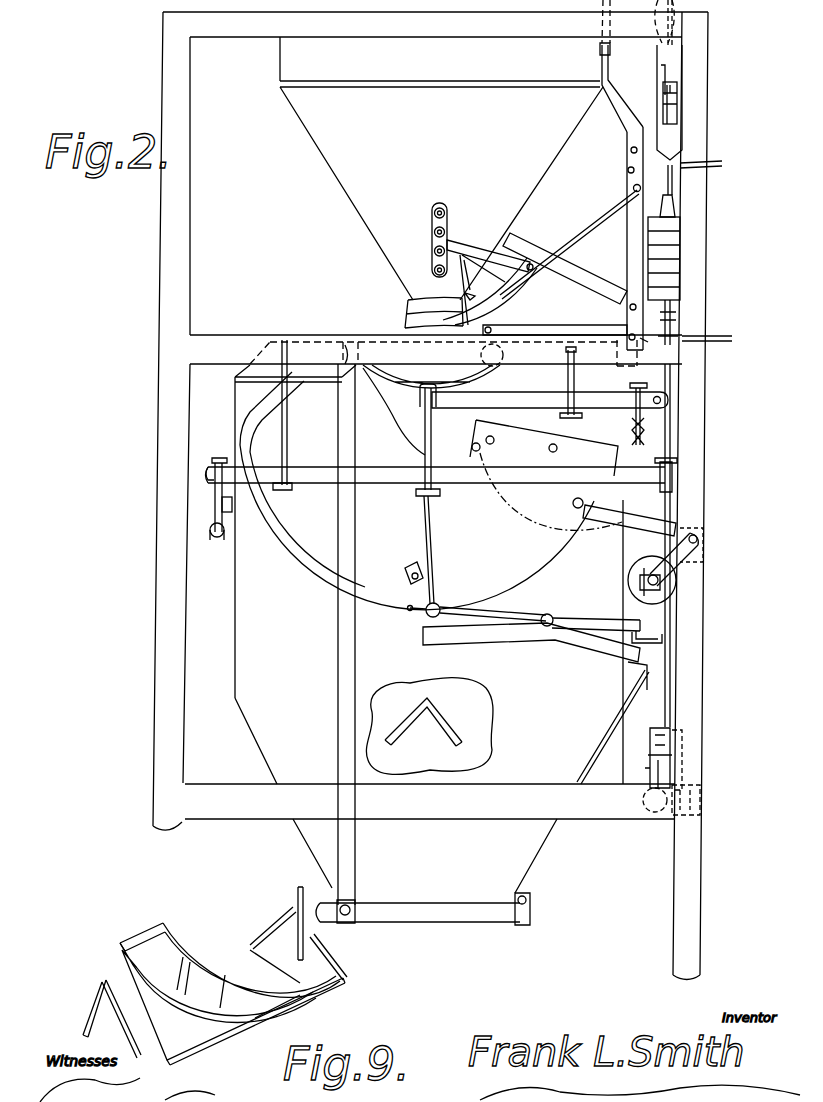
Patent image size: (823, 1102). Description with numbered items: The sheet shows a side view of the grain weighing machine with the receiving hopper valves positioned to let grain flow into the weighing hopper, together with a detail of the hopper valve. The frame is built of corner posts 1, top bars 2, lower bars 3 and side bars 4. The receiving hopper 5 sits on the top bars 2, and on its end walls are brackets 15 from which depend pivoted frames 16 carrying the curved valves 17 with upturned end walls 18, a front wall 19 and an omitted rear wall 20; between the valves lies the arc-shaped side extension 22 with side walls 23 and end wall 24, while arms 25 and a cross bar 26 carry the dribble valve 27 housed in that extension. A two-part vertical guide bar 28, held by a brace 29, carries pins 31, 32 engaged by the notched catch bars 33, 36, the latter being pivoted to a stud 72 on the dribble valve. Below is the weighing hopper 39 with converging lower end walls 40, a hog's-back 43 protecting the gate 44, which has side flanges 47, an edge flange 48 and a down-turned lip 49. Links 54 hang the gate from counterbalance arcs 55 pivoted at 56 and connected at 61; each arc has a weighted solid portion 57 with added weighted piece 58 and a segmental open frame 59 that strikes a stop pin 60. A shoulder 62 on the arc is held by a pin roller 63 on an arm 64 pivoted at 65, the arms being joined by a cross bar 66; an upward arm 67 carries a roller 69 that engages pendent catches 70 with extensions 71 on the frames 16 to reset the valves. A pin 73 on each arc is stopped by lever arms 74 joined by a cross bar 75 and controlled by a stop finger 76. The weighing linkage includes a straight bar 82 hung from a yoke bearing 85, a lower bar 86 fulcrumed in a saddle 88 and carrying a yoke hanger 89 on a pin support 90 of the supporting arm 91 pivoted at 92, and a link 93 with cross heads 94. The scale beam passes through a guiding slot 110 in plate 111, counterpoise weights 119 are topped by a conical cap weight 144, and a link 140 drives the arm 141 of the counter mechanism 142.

In FIG. 2, the corner posts 1 is at (170, 828).
In FIG. 2, the top bars 2 is at (385, 30).
In FIG. 2, the lower bars 3 is at (430, 801).
In FIG. 2, the side bars 4 is at (237, 347).
In FIG. 2, the receiving hopper 5 is at (318, 121).
In FIG. 2, the brackets 15 is at (445, 207).
In FIG. 2, the frames 16 is at (468, 250).
In FIG. 9, the frames 16 is at (98, 1002).
In FIG. 2, the valves 17 is at (430, 240).
In FIG. 9, the valves 17 is at (228, 960).
In FIG. 9, the end walls 18 is at (110, 1040).
In FIG. 9, the front wall 19 is at (275, 1000).
In FIG. 9, the open rear end 20 is at (190, 960).
In FIG. 9, the side extension 22 is at (120, 950).
In FIG. 9, the side walls 23 is at (128, 970).
In FIG. 9, the end wall 24 is at (150, 930).
In FIG. 2, the arms 25 is at (330, 928).
In FIG. 9, the bar 26 is at (300, 990).
In FIG. 9, the dribble valve 27 is at (240, 1030).
In FIG. 2, the vertical guide bar 28 is at (629, 261).
In FIG. 2, the brace 29 is at (612, 105).
In FIG. 2, the pin 31 is at (631, 186).
In FIG. 2, the pin 32 is at (640, 338).
In FIG. 2, the catch bar 33 is at (676, 213).
In FIG. 2, the catch bar 36 is at (555, 320).
In FIG. 2, the weighing hopper 39 is at (234, 648).
In FIG. 2, the lower end walls 40 is at (305, 843).
In FIG. 2, the hog's-back 43 is at (440, 718).
In FIG. 2, the gate 44 is at (385, 928).
In FIG. 2, the side flanges 47 is at (460, 906).
In FIG. 2, the edge flange 48 is at (532, 897).
In FIG. 2, the down-turned lip 49 is at (358, 918).
In FIG. 2, the links 54 is at (338, 680).
In FIG. 2, the counterbalance arcs 55 is at (416, 440).
In FIG. 2, the pivots 56 is at (471, 447).
In FIG. 2, the solid portion 57 is at (551, 499).
In FIG. 2, the weighted piece 58 is at (544, 448).
In FIG. 2, the open frame 59 is at (302, 536).
In FIG. 2, the stop pin 60 is at (410, 576).
In FIG. 2, the link connection 61 is at (345, 345).
In FIG. 2, the shoulder 62 is at (420, 630).
In FIG. 2, the pin roller 63 is at (452, 600).
In FIG. 2, the arm 64 is at (512, 612).
In FIG. 2, the pivot 65 is at (556, 620).
In FIG. 2, the cross bar 66 is at (645, 622).
In FIG. 2, the arm 67 is at (476, 372).
In FIG. 2, the roller 69 is at (508, 343).
In FIG. 2, the pendent catches 70 is at (410, 306).
In FIG. 2, the extension 71 is at (540, 244).
In FIG. 2, the stud 72 is at (508, 310).
In FIG. 2, the pin 73 is at (430, 580).
In FIG. 2, the lever arms 74 is at (505, 640).
In FIG. 2, the cross bar 75 is at (648, 650).
In FIG. 2, the stop finger 76 is at (650, 680).
In FIG. 2, the straight bar 82 is at (606, 410).
In FIG. 2, the yoke bearing 85 is at (578, 357).
In FIG. 2, the bar 86 is at (322, 447).
In FIG. 2, the saddle 88 is at (289, 420).
In FIG. 2, the yoke hanger 89 is at (212, 488).
In FIG. 2, the pin support 90 is at (220, 538).
In FIG. 2, the supporting arm 91 is at (230, 522).
In FIG. 2, the pivot support 92 is at (233, 505).
In FIG. 2, the link 93 is at (423, 494).
In FIG. 2, the cross heads 94 is at (440, 512).
In FIG. 2, the guiding slot 110 is at (682, 116).
In FIG. 2, the plate 111 is at (676, 135).
In FIG. 2, the weights 119 is at (676, 262).
In FIG. 2, the link 140 is at (604, 532).
In FIG. 2, the arm 141 is at (660, 578).
In FIG. 2, the counter mechanism 142 is at (700, 540).
In FIG. 2, the conical cap weight 144 is at (674, 224).